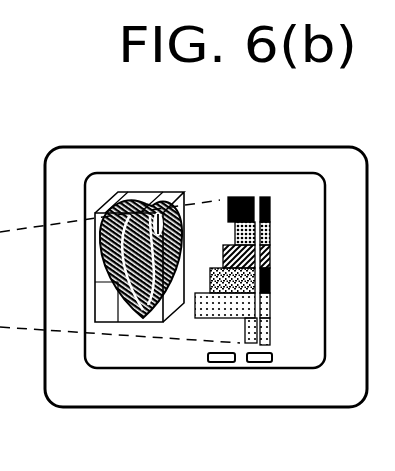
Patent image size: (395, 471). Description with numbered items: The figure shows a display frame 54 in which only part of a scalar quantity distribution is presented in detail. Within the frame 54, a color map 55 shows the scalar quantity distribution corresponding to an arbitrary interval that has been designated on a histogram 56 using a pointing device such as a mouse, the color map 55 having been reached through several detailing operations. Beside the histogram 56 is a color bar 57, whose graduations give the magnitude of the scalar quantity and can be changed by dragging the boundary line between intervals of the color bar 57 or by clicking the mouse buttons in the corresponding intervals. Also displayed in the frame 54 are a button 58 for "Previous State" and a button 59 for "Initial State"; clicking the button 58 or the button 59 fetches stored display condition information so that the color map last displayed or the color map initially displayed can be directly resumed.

The frame 54 is at (143, 355).
The color map 55 is at (108, 286).
The histogram 56 is at (236, 197).
The color bar 57 is at (263, 197).
The button 58 is at (213, 363).
The button 59 is at (262, 363).